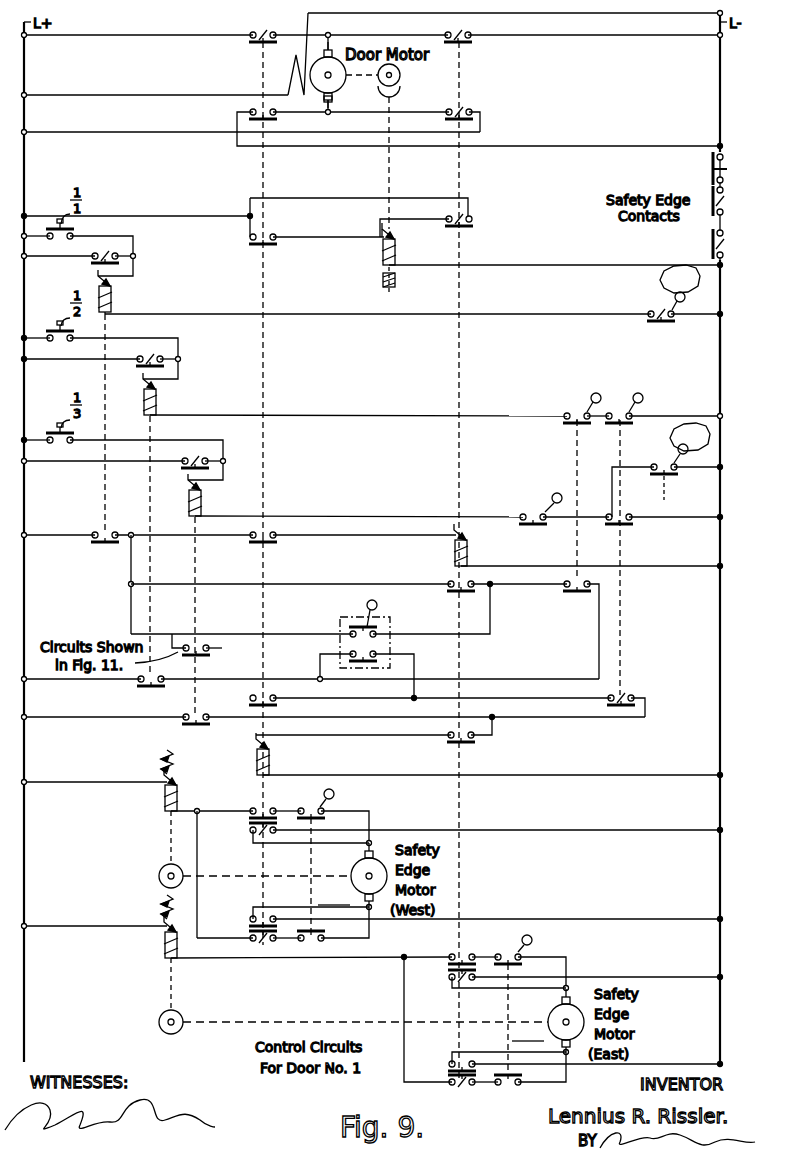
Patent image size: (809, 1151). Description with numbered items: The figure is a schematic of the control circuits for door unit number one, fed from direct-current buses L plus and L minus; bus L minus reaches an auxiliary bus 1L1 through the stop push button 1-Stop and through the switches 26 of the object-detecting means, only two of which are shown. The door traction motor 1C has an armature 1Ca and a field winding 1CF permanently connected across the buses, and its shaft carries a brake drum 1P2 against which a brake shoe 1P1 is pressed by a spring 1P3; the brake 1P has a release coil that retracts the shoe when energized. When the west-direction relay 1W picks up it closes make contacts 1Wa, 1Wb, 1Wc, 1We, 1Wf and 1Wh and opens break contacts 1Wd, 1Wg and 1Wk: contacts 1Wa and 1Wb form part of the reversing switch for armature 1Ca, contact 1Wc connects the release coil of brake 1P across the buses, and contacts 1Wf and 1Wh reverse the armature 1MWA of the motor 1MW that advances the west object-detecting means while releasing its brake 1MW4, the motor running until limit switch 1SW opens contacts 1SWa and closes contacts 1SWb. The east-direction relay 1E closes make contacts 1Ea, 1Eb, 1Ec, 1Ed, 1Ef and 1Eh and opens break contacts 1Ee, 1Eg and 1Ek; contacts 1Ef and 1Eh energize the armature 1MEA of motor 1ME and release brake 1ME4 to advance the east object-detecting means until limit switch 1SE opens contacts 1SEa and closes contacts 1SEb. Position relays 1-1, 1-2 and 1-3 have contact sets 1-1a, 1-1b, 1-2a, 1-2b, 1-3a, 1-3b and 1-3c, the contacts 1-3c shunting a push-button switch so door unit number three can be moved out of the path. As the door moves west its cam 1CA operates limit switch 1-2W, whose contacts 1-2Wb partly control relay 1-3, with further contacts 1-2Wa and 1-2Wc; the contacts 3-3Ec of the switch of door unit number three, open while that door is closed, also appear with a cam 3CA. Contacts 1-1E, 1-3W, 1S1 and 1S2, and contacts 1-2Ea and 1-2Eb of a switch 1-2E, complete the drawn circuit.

The field winding 1CF is at (286, 54).
The direct-current door traction motor 1C is at (338, 75).
The armature 1Ca is at (324, 98).
The brake drum 1P2 is at (400, 75).
The brake shoe 1P1 is at (399, 94).
The make contact of west-direction relay 1Wa is at (258, 26).
The make contact of west-direction relay 1Wb is at (278, 124).
The make contact of west-direction relay 1Wc is at (266, 248).
The break contact of west-direction relay 1Wd is at (272, 542).
The make contact of west-direction relay 1We is at (276, 708).
The make contact of west-direction relay 1Wf is at (255, 808).
The break contact of west-direction relay 1Wg is at (252, 831).
The make contact of west-direction relay 1Wh is at (252, 923).
The break contact of west-direction relay 1Wk is at (254, 943).
The west-direction relay 1W is at (271, 758).
The make contact of east-direction relay 1Ea is at (470, 45).
The make contact of east-direction relay 1Eb is at (466, 109).
The make contact of east-direction relay 1Ec is at (471, 221).
The make contact of east-direction relay 1Ed is at (453, 597).
The break contact of east-direction relay 1Ee is at (466, 744).
The make contact of east-direction relay 1Ef is at (462, 955).
The break contact of east-direction relay 1Eg is at (452, 977).
The make contact of east-direction relay 1Eh is at (452, 1066).
The break contact of east-direction relay 1Ek is at (459, 1088).
The east-direction relay 1E is at (469, 549).
The brake 1P is at (398, 250).
The spring 1P3 is at (397, 285).
The stop push button 1-Stop is at (710, 170).
The switches of object-detecting means 26 is at (724, 214).
The cam 1CA is at (661, 284).
The cam operated contact 1-1E is at (652, 328).
The auxiliary bus 1L1 is at (721, 366).
The contacts of first-position relay 1-1a is at (103, 250).
The first-position relay 1-1 is at (112, 296).
The contacts of first-position relay 1-1b is at (113, 544).
The contacts of second-position relay 1-2a is at (148, 353).
The second-position relay 1-2 is at (157, 398).
The contacts of second-position relay 1-2b is at (161, 686).
The contacts of third-position relay 1-3a is at (193, 455).
The third-position relay 1-3 is at (202, 500).
The contacts of third-position relay 1-3b is at (190, 727).
The contacts of third-position relay 1-3c is at (205, 656).
The limit switch contact 1-2Ea is at (572, 426).
The limit switch contact 1-2Eb is at (578, 596).
The limit switch 1-2E is at (555, 500).
The contacts of limit switch 1-2W 1-2Wa is at (647, 408).
The contacts of limit switch 1-2W 1-2Wb is at (624, 526).
The contacts of limit switch 1-2W 1-2Wc is at (639, 693).
The limit switch 1-2W is at (621, 598).
The door position cam 3CA is at (672, 440).
The contacts of limit switch 3-3E 3-3Ec is at (677, 482).
The limit switch contact 1-3W is at (524, 508).
The safety edge switch contact 1S1 is at (380, 628).
The safety edge switch contact 1S2 is at (376, 656).
The brake 1MW4 is at (170, 834).
The armature 1MWA is at (352, 868).
The limit switch 1SW is at (293, 875).
The contacts of limit switch 1SW 1SWa is at (303, 803).
The contacts of limit switch 1SW 1SWb is at (314, 942).
The motor 1MW is at (335, 897).
The brake 1ME4 is at (170, 979).
The armature 1MEA is at (550, 1009).
The limit switch 1SE is at (494, 1020).
The contacts of limit switch 1SE 1SEa is at (515, 966).
The contacts of limit switch 1SE 1SEb is at (511, 1087).
The motor 1ME is at (528, 1033).